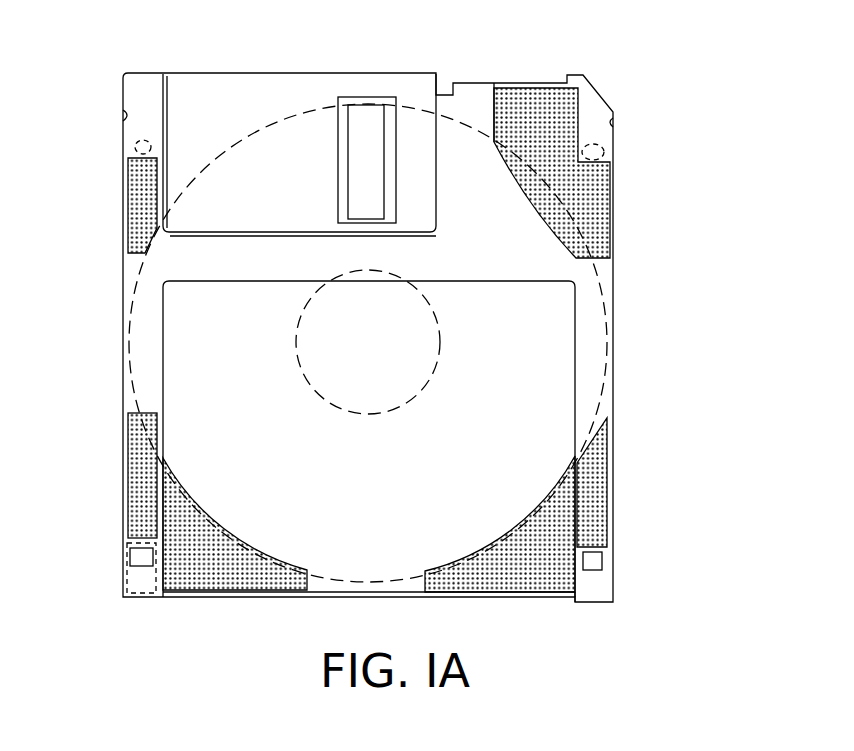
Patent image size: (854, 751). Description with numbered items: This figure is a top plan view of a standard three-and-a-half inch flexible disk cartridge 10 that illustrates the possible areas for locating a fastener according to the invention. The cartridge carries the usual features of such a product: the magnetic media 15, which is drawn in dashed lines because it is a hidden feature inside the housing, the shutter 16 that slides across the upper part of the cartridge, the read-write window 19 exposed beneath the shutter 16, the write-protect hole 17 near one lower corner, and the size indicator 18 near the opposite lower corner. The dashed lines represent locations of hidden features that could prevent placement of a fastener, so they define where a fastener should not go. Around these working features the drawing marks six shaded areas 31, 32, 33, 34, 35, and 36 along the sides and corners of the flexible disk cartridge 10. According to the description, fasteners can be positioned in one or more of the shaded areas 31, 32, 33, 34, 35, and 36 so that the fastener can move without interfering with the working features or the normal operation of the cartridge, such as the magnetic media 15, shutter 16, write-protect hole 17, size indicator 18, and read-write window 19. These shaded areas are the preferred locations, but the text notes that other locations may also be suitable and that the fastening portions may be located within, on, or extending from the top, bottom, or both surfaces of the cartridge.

The flexible disk cartridge 10 is at (660, 232).
The magnetic media 15 is at (614, 298).
The shutter 16 is at (437, 73).
The write-protect hole 17 is at (140, 585).
The size indicator 18 is at (603, 560).
The read-write window 19 is at (365, 118).
The shaded area 31 is at (598, 188).
The shaded area 32 is at (590, 491).
The shaded area 33 is at (521, 578).
The shaded area 34 is at (196, 573).
The shaded area 35 is at (140, 489).
The shaded area 36 is at (140, 180).